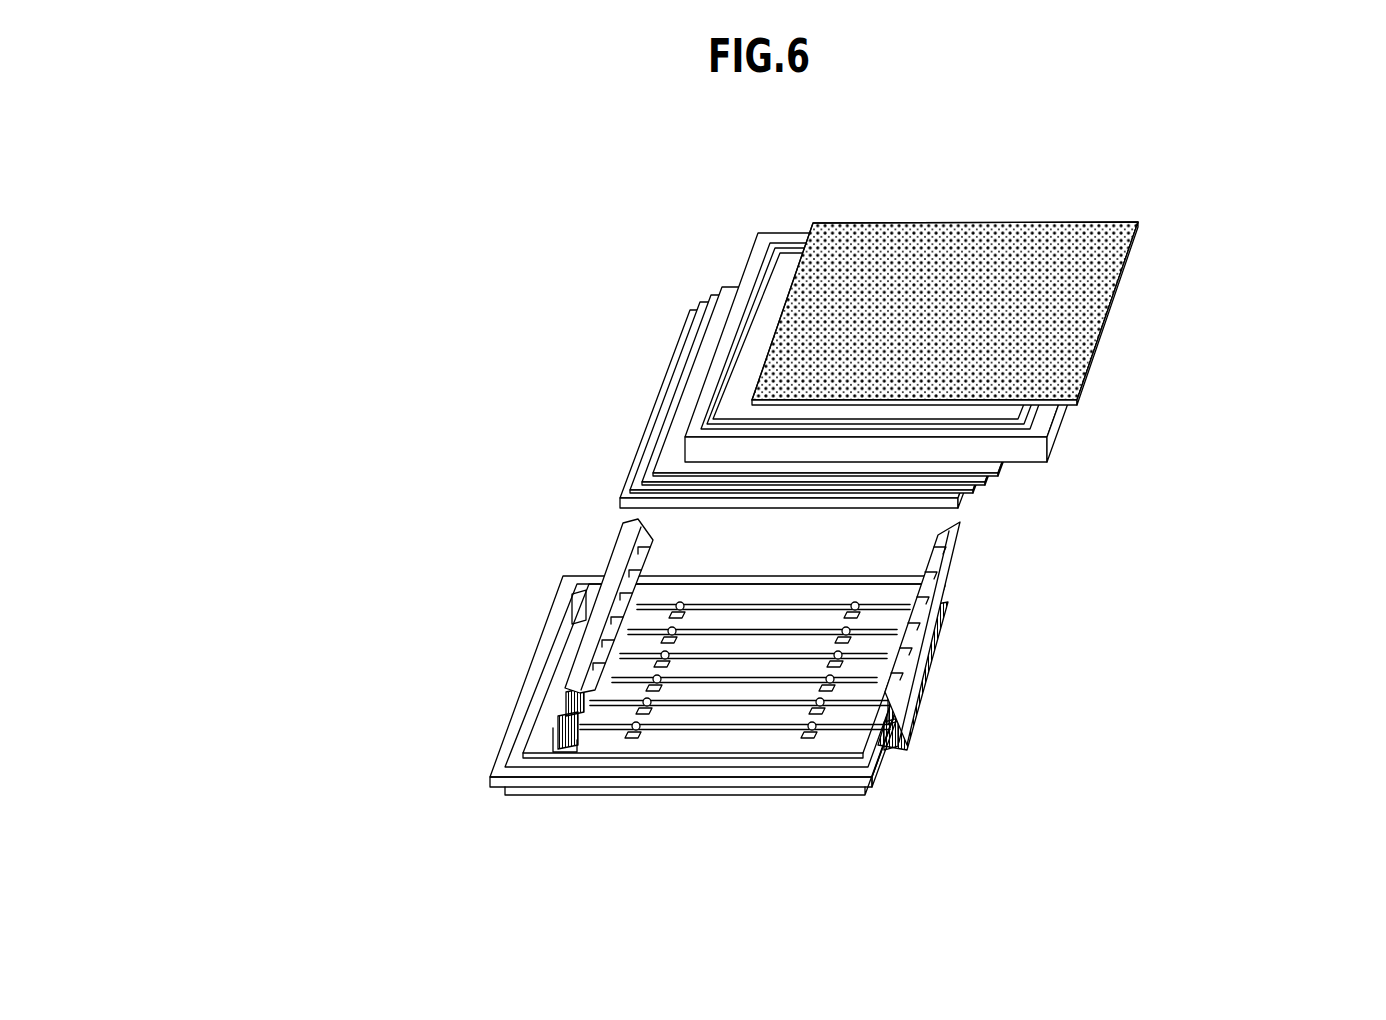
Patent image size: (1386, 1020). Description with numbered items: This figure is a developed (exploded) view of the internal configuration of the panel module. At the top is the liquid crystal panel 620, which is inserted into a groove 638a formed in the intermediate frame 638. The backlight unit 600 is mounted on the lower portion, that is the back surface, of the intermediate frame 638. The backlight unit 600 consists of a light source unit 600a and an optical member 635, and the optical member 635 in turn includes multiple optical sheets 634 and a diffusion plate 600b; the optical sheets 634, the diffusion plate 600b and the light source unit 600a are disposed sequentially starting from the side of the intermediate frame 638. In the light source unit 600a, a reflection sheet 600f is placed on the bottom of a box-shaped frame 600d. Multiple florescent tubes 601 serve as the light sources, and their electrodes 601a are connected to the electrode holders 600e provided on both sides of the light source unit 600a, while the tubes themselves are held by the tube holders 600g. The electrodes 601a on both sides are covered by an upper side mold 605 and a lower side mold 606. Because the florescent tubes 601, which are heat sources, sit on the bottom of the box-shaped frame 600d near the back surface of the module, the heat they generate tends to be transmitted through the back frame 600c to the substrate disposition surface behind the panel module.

The backlight unit 600 is at (325, 300).
The light source unit 600a is at (570, 552).
The diffusion plate 600b is at (655, 428).
The back frame 600c is at (843, 797).
The box-shaped frame 600d is at (533, 681).
The electrode holder 600e is at (907, 728).
The reflection sheet 600f is at (838, 741).
The tube holder 600g is at (810, 732).
The florescent tube 601 is at (655, 727).
The electrode 601a is at (592, 728).
The upper side mold 605 is at (967, 522).
The lower side mold 606 is at (933, 660).
The liquid crystal panel 620 is at (992, 245).
The optical sheet 634 is at (700, 348).
The optical member 635 is at (477, 422).
The intermediate frame 638 is at (834, 282).
The groove 638a is at (817, 190).